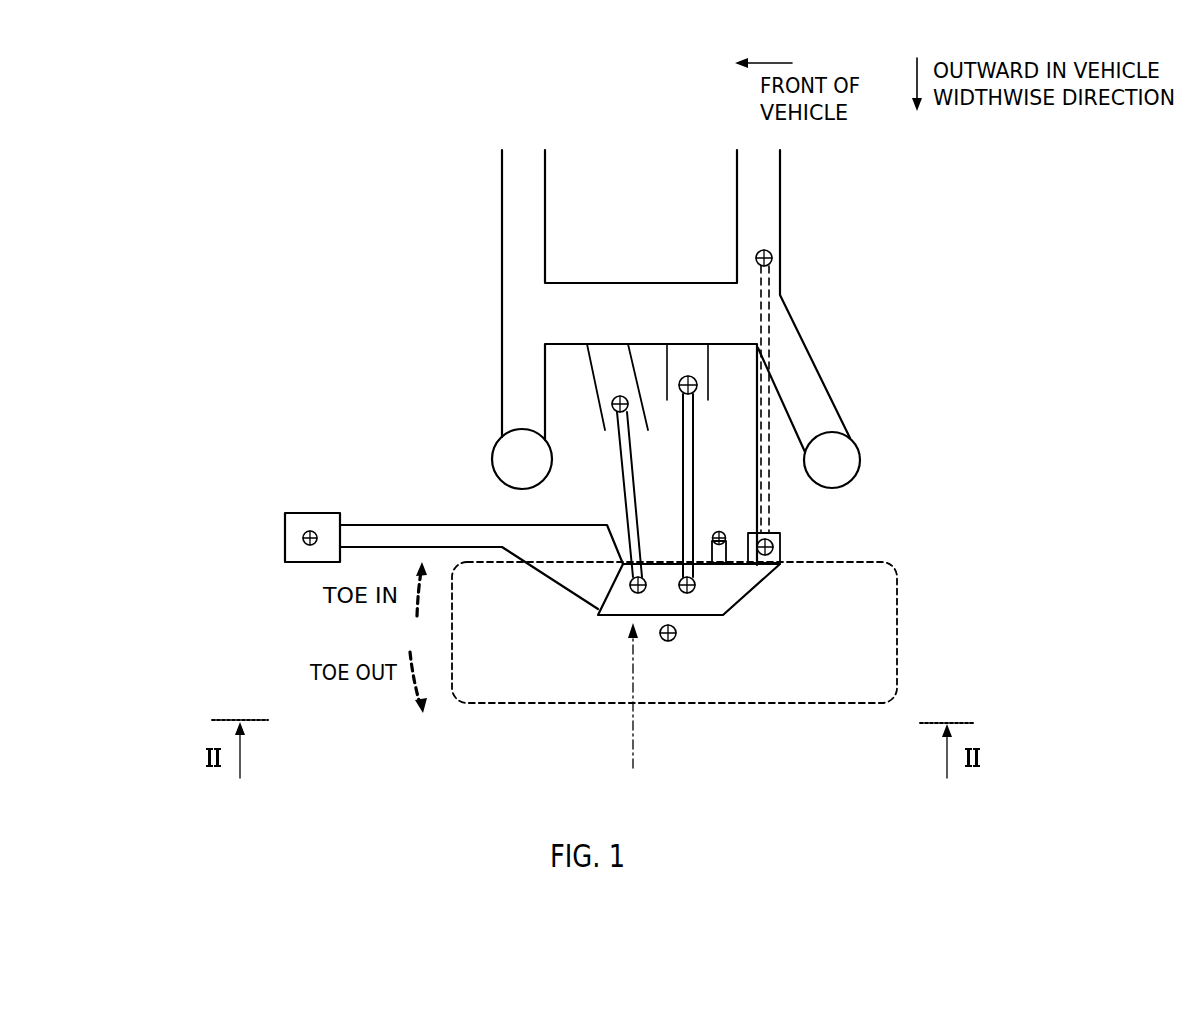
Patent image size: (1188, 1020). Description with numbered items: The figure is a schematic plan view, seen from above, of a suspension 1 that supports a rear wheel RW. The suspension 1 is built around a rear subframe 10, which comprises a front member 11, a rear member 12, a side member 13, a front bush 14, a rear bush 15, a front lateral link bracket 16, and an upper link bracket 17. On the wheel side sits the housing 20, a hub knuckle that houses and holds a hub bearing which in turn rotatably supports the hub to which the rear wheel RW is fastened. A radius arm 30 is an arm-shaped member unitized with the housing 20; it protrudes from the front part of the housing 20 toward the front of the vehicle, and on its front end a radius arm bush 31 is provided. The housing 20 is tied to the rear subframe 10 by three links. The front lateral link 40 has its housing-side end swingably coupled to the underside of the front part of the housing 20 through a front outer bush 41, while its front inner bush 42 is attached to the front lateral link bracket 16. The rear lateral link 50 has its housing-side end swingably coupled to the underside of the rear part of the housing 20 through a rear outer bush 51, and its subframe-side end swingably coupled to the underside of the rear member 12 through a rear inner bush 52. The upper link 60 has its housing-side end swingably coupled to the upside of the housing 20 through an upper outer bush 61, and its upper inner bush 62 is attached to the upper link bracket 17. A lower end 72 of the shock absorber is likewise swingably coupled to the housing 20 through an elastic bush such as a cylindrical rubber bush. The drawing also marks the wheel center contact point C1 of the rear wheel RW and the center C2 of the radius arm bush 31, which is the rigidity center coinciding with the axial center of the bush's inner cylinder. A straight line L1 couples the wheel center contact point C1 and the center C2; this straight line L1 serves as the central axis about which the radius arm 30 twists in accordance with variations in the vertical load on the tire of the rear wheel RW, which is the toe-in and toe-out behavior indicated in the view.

The suspension 1 is at (384, 140).
The rear subframe 10 is at (519, 131).
The front member 11 is at (502, 203).
The rear member 12 is at (780, 180).
The side member 13 is at (575, 287).
The front bush 14 is at (496, 455).
The rear bush 15 is at (857, 465).
The front lateral link bracket 16 is at (593, 380).
The upper link bracket 17 is at (708, 368).
The housing 20 is at (597, 607).
The radius arm 30 is at (425, 530).
The radius arm bush 31 is at (285, 560).
The front lateral link 40 is at (627, 497).
The front outer bush 41 is at (634, 592).
The front inner bush 42 is at (618, 396).
The rear lateral link 50 is at (768, 423).
The rear outer bush 51 is at (775, 550).
The rear inner bush 52 is at (772, 257).
The upper link 60 is at (691, 515).
The upper outer bush 61 is at (695, 587).
The upper inner bush 62 is at (687, 376).
The lower end of the shock absorber 72 is at (728, 538).
The wheel center contact point C1 is at (685, 634).
The center of the radius arm bush C2 is at (288, 536).
The straight line L1 is at (637, 711).
The rear wheel RW is at (823, 703).